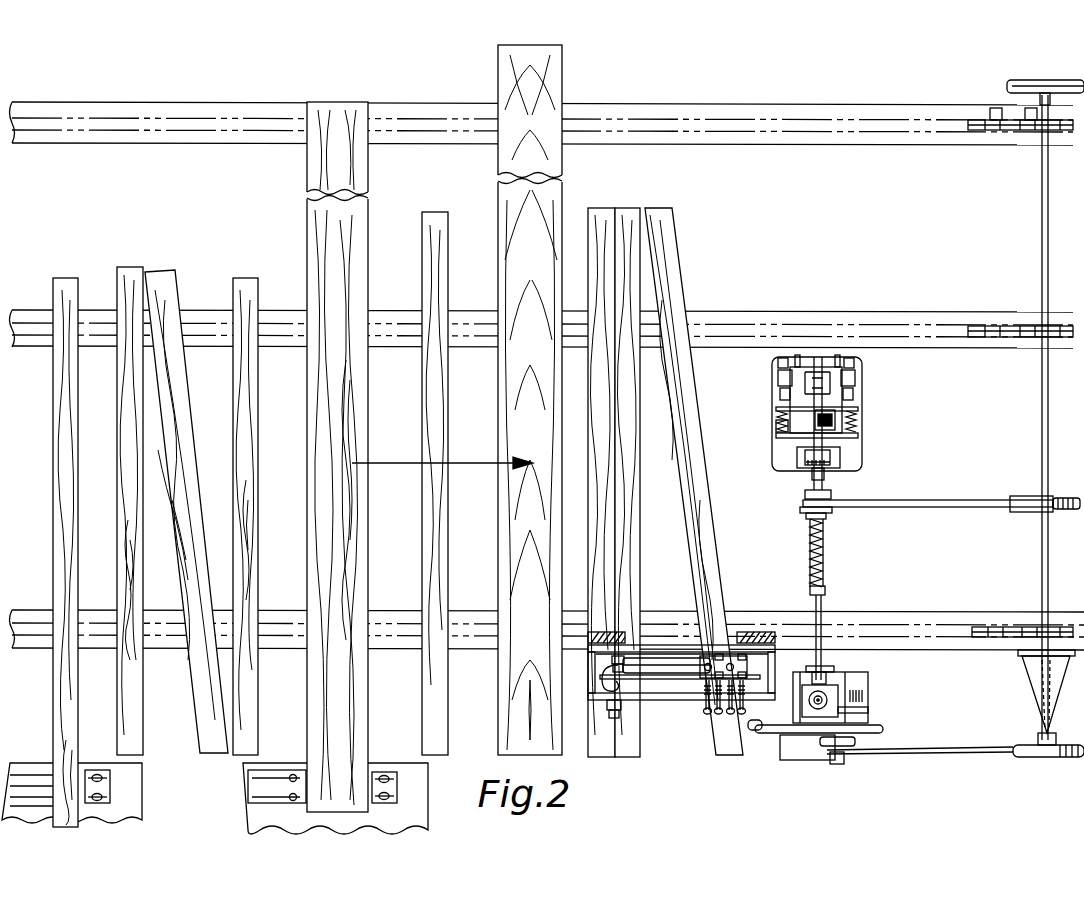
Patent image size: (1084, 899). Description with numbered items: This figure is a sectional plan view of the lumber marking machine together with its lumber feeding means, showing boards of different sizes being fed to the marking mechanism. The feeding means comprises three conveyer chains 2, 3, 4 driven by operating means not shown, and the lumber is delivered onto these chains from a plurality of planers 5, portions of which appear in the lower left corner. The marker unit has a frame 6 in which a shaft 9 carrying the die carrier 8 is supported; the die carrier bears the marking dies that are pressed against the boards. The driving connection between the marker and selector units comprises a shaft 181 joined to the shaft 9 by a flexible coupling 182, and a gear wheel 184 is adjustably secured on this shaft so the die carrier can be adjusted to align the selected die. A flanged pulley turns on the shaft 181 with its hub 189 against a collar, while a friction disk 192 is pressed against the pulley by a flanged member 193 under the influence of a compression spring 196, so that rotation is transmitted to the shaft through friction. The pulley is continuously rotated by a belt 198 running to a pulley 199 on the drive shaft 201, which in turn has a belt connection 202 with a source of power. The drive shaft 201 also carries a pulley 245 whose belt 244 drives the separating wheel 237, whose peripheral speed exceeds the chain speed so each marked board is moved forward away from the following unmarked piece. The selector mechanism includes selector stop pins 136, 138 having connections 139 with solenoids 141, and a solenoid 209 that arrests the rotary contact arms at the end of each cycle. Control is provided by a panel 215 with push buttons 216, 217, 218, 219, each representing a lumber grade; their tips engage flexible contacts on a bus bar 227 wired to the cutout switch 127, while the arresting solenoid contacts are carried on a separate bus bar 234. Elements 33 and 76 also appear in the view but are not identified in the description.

The conveyer chain 2 is at (987, 128).
The conveyer chain 3 is at (983, 326).
The conveyer chain 4 is at (985, 627).
The planer 5 is at (133, 811).
The frame 6 is at (845, 690).
The die carrier 8 is at (838, 710).
The shaft 9 is at (825, 680).
The base bar 33 is at (882, 730).
The gear 76 is at (840, 695).
The cutout switch 127 is at (616, 718).
The selector stop pin 136 is at (800, 425).
The selector stop pin 138 is at (778, 425).
The connection 139 is at (778, 394).
The solenoid 141 is at (822, 378).
The shaft 181 is at (822, 604).
The flexible coupling 182 is at (824, 676).
The gear wheel 184 is at (797, 466).
The hub 189 is at (805, 497).
The friction disk 192 is at (835, 510).
The flanged member 193 is at (828, 515).
The compression spring 196 is at (812, 565).
The belt 198 is at (958, 503).
The pulley 199 is at (1022, 498).
The drive shaft 201 is at (1040, 428).
The belt connection 202 is at (1076, 80).
The solenoid 209 is at (858, 414).
The control panel 215 is at (670, 650).
The push button 216 is at (706, 714).
The push button 217 is at (718, 714).
The push button 218 is at (731, 714).
The push button 219 is at (742, 714).
The bus bar 227 is at (680, 680).
The bus bar 234 is at (652, 657).
The separating wheel 237 is at (820, 744).
The belt 244 is at (950, 752).
The pulley 245 is at (1050, 757).